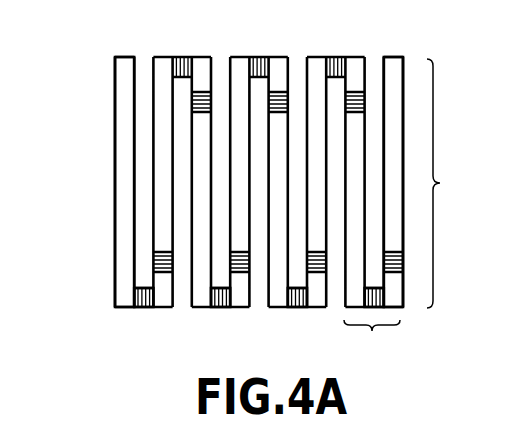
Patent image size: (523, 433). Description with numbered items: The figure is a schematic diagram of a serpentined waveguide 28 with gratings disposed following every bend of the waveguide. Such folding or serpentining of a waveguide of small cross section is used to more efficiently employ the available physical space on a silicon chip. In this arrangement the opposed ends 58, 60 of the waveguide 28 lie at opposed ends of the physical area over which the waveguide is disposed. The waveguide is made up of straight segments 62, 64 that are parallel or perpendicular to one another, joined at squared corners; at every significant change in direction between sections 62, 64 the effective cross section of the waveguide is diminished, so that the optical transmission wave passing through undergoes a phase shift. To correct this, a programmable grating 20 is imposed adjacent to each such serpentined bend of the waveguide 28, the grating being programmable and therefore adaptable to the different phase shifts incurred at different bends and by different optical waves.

The programmable grating 20 is at (145, 307).
The waveguide 28 is at (213, 187).
The waveguide end 58 is at (127, 57).
The waveguide end 60 is at (392, 58).
The straight segment 62 is at (452, 183).
The straight segment 64 is at (372, 343).